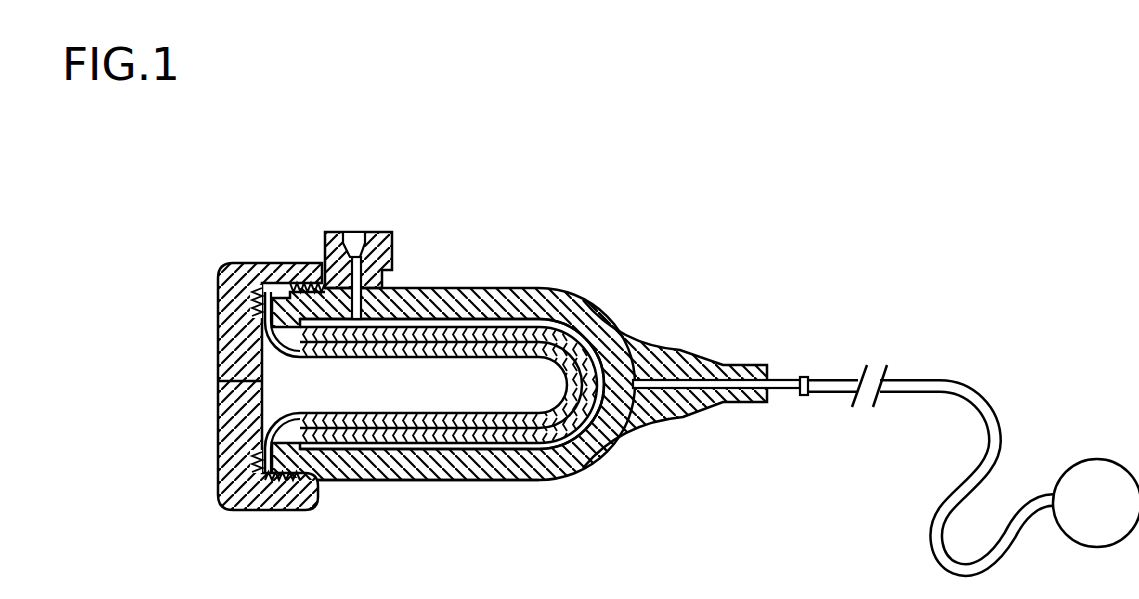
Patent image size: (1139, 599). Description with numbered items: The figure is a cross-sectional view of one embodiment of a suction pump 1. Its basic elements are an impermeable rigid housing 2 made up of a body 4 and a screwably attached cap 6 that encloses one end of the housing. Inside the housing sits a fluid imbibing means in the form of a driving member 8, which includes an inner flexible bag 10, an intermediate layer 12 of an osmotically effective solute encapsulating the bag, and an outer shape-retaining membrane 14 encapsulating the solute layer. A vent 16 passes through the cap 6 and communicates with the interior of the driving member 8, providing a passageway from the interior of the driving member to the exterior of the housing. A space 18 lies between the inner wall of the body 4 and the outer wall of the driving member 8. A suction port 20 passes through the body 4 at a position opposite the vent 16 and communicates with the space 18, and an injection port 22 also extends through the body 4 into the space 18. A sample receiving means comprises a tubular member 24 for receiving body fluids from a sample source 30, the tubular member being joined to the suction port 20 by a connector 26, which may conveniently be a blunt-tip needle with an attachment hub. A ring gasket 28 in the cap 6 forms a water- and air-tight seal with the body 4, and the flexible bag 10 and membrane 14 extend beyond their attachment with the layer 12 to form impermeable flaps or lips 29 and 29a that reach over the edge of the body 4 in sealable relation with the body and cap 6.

The suction pump 1 is at (388, 392).
The rigid housing 2 is at (440, 274).
The body 4 is at (356, 487).
The cap 6 is at (262, 512).
The driving member 8 is at (498, 312).
The inner flexible bag 10 is at (561, 449).
The intermediate layer 12 is at (500, 440).
The outer shape-retaining membrane 14 is at (439, 425).
The vent 16 is at (218, 382).
The space 18 is at (603, 340).
The suction port 20 is at (772, 393).
The injection port 22 is at (357, 232).
The tubular member 24 is at (910, 377).
The connector 26 is at (790, 378).
The ring gasket 28 is at (247, 286).
The flap or lip 29 is at (217, 432).
The flap or lip 29a is at (217, 485).
The sample source 30 is at (1093, 460).